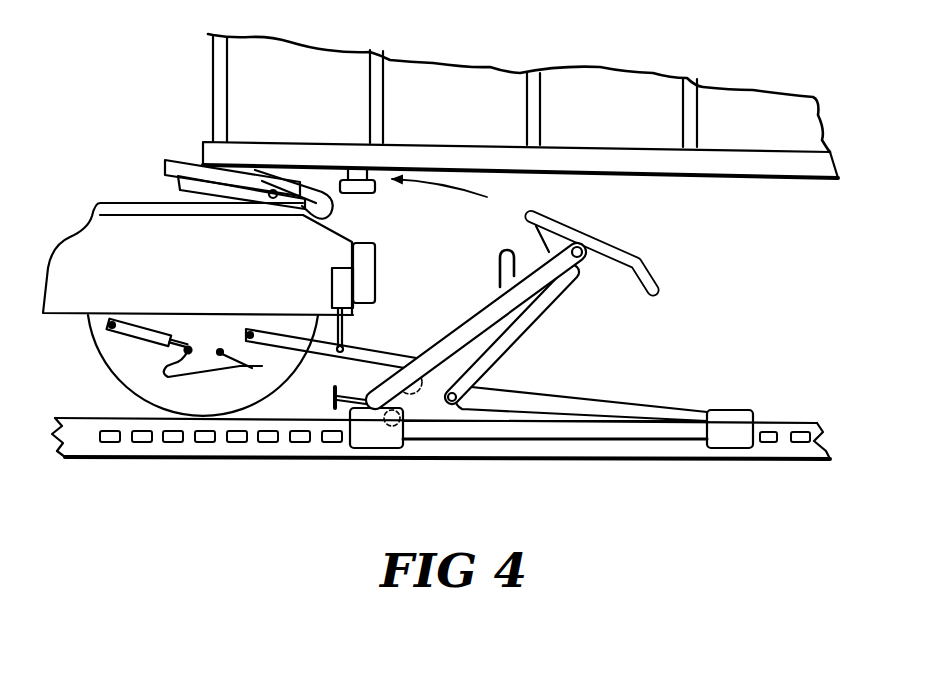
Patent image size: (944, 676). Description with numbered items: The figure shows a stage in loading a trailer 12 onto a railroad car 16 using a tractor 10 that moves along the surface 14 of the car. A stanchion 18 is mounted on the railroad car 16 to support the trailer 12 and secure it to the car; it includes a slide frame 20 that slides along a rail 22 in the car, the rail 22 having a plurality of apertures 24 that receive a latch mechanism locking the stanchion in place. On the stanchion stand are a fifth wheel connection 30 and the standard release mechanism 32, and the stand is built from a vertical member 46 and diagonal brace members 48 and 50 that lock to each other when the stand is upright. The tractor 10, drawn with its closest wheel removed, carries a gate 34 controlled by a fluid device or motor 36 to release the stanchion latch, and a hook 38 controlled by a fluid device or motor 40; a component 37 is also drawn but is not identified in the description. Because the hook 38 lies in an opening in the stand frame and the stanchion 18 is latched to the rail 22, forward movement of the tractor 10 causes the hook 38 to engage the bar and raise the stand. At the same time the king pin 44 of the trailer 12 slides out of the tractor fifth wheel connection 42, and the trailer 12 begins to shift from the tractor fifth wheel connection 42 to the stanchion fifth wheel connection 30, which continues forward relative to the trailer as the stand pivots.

The tractor 10 is at (78, 293).
The trailer 12 is at (648, 137).
The surface 14 is at (115, 417).
The railroad car 16 is at (730, 468).
The stanchion 18 is at (679, 300).
The slide frame 20 is at (655, 432).
The rail 22 is at (785, 440).
The apertures 24 is at (800, 440).
The fifth wheel connection 30 is at (620, 245).
The release mechanism 32 is at (497, 263).
The gate 34 is at (193, 367).
The fluid device or motor 36 is at (118, 368).
The link bar 37 is at (387, 353).
The hook 38 is at (423, 397).
The fluid device or motor 40 is at (333, 282).
The fifth wheel connection 42 is at (187, 162).
The king pin 44 is at (375, 187).
The vertical member 46 is at (523, 297).
The diagonal brace member 48 is at (507, 343).
The diagonal brace member 50 is at (573, 400).